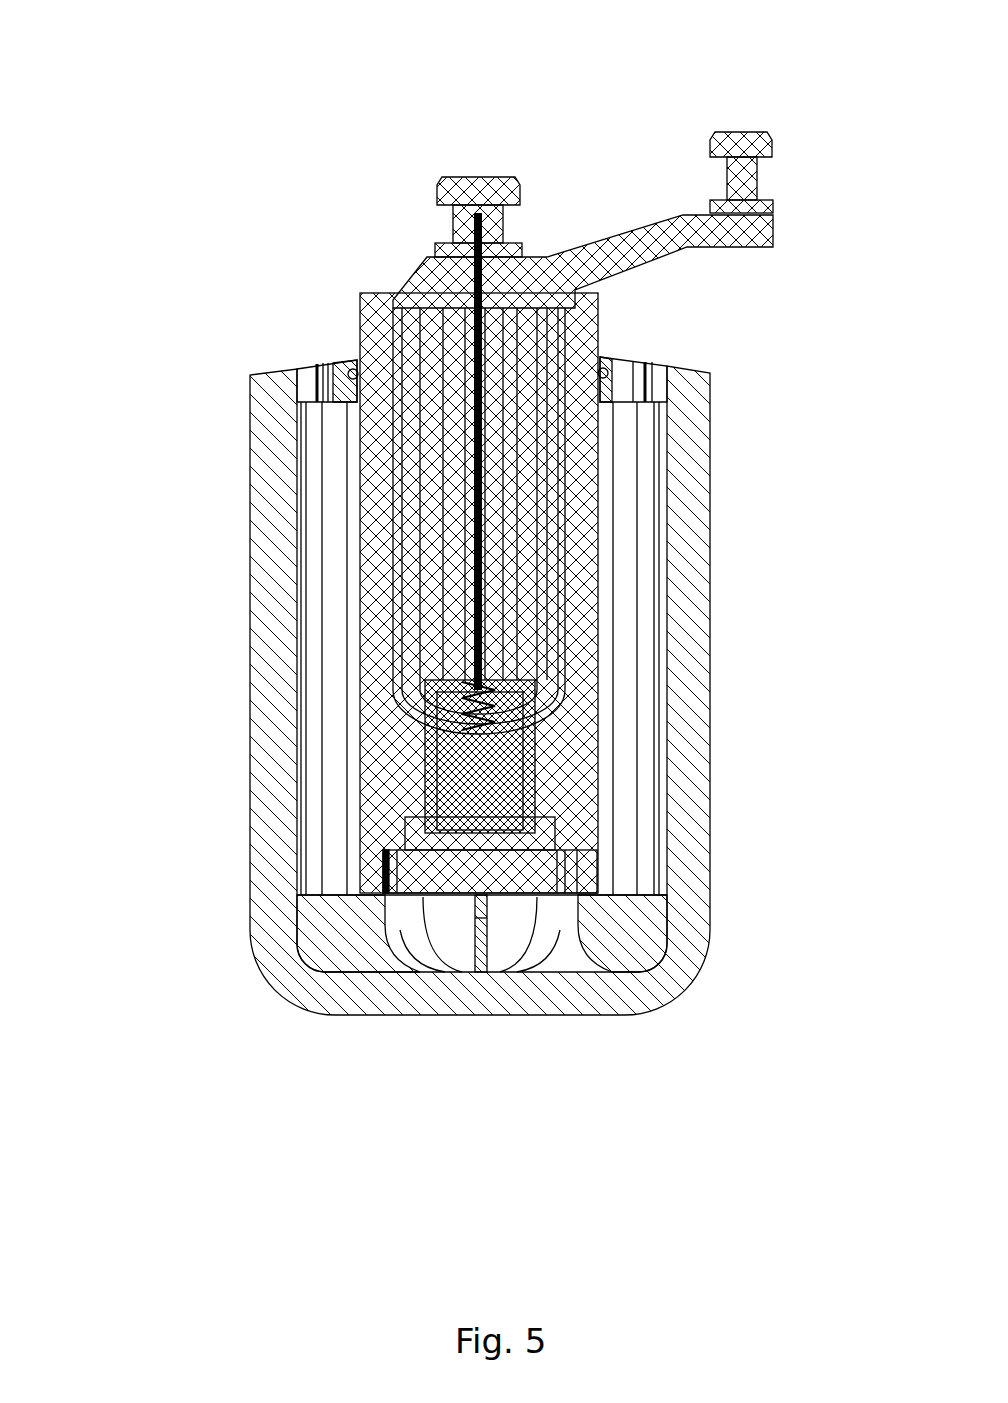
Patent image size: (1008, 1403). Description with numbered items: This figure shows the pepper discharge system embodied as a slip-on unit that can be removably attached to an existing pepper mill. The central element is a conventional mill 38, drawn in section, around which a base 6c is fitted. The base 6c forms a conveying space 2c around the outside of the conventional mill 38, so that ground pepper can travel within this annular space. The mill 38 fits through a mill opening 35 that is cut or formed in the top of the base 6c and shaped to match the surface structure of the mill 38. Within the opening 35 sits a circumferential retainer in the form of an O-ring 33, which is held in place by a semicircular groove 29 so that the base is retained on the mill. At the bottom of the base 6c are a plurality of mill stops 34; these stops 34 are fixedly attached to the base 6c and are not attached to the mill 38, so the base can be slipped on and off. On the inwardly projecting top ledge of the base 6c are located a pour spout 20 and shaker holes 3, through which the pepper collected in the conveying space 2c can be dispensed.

The conventional mill 38 is at (550, 228).
The O-ring 33 is at (350, 369).
The shaker holes 3 is at (317, 362).
The mill opening 35 is at (600, 353).
The pour spout 20 is at (610, 360).
The semicircular groove 29 is at (703, 467).
The base 6c is at (693, 622).
The conveying space 2c is at (628, 767).
The mill stops 34 is at (330, 927).